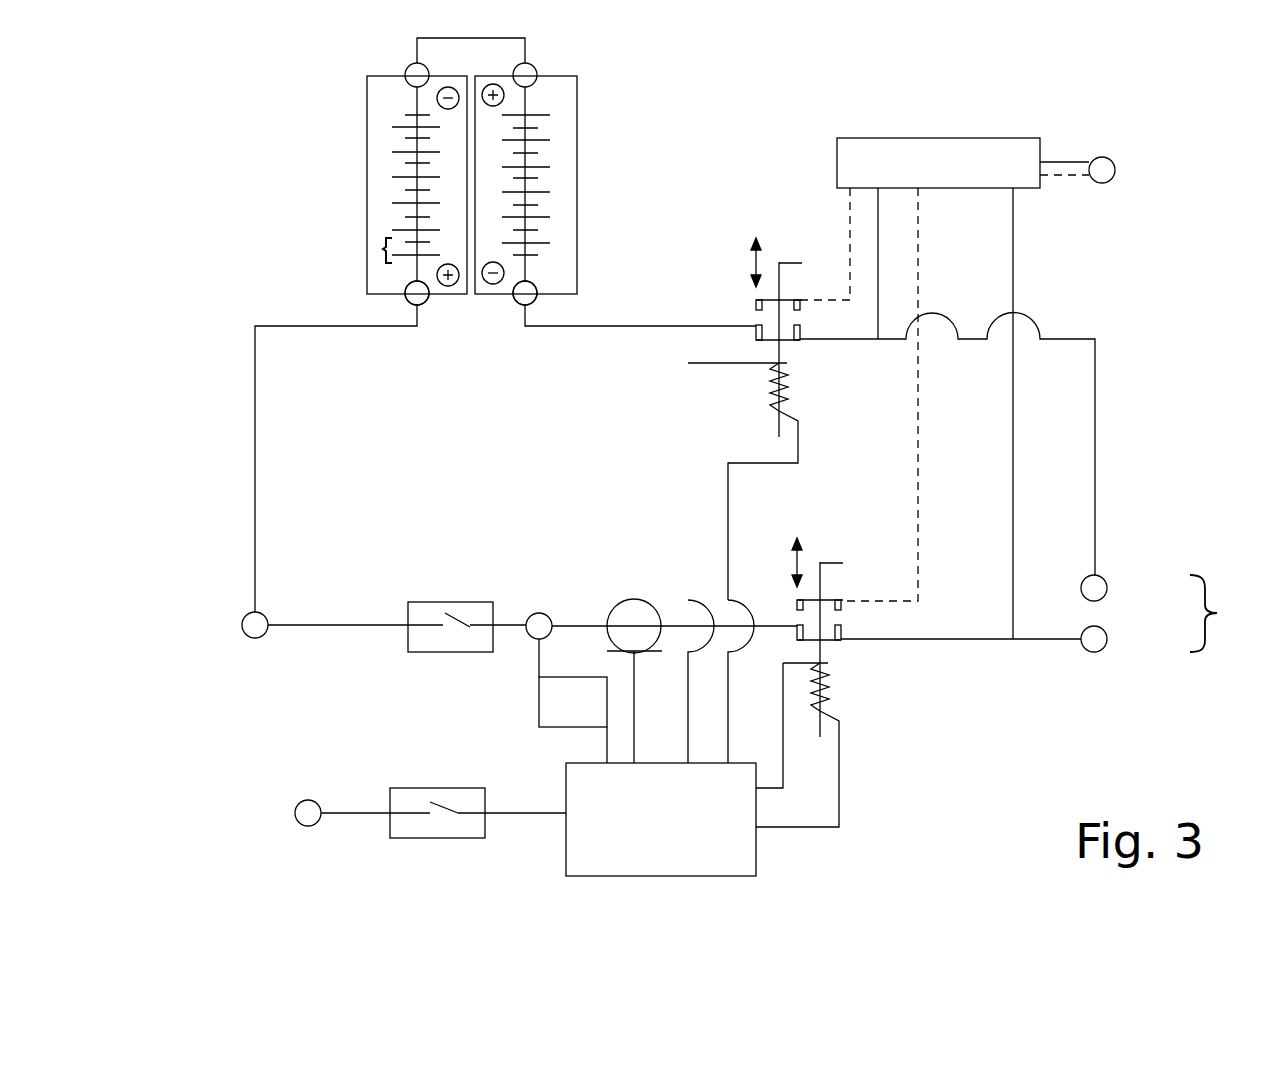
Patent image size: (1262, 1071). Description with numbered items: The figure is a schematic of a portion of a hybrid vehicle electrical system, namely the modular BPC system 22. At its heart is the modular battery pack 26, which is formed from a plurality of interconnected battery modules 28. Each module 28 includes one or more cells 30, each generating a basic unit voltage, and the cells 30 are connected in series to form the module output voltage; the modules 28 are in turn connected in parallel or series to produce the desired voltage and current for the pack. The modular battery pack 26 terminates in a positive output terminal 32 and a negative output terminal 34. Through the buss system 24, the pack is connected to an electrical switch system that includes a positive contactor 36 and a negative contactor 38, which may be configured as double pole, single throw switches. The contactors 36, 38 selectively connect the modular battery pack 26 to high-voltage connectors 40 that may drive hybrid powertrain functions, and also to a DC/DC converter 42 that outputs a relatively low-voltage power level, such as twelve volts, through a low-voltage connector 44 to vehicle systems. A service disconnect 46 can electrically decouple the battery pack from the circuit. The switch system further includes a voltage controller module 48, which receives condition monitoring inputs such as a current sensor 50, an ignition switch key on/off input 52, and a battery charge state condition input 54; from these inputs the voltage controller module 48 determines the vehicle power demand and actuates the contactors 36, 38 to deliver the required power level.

The modular BPC system 22 is at (450, 227).
The buss system 24 is at (253, 508).
The modular battery pack 26 is at (614, 111).
The battery modules 28 is at (477, 172).
The cells 30 is at (383, 249).
The positive output terminal 32 is at (423, 306).
The negative output terminal 34 is at (520, 307).
The positive contactor 36 is at (855, 714).
The negative contactor 38 is at (802, 369).
The high-voltage connectors 40 is at (1139, 560).
The DC/DC converter 42 is at (965, 150).
The low-voltage connector 44 is at (1100, 157).
The service disconnect 46 is at (470, 600).
The voltage controller module 48 is at (742, 847).
The current sensor 50 is at (637, 600).
The ignition switch key on/off input 52 is at (400, 800).
The battery charge state condition input 54 is at (550, 713).